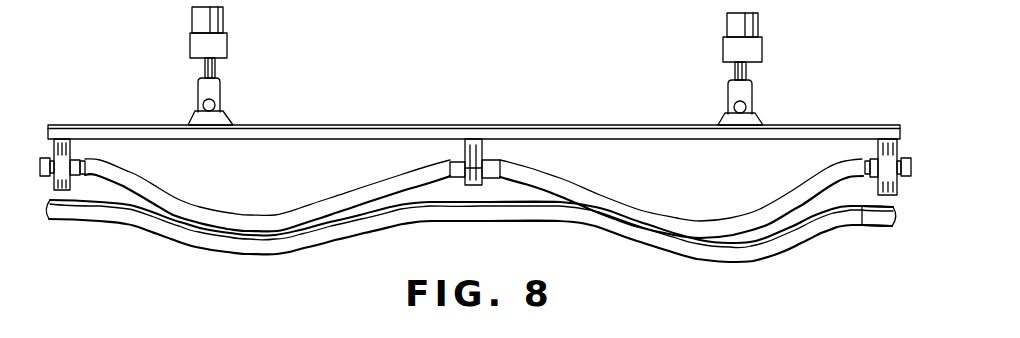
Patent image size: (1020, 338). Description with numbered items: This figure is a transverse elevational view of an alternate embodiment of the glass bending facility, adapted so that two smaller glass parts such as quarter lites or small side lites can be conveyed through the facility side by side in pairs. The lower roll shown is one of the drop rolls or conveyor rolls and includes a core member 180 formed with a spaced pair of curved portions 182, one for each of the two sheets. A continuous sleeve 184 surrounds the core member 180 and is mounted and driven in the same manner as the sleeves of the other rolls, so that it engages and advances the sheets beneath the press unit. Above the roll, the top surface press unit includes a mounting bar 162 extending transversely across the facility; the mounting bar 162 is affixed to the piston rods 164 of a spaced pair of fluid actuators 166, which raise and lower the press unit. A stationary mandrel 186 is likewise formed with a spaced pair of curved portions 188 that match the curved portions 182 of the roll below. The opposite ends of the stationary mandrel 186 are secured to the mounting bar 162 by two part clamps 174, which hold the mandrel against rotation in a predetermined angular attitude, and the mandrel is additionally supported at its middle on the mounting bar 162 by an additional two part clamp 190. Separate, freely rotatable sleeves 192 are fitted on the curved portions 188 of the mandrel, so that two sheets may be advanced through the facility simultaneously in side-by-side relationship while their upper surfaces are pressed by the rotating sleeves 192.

The mounting bar 162 is at (577, 133).
The piston rods 164 is at (205, 69).
The fluid actuators 166 is at (223, 20).
The two part clamps 174 is at (72, 150).
The core member 180 is at (882, 221).
The curved portions 182 is at (187, 251).
The continuous sleeve 184 is at (492, 213).
The stationary mandrel 186 is at (456, 162).
The curved portions 188 is at (312, 206).
The two part clamp 190 is at (483, 152).
The sleeves 192 is at (197, 211).